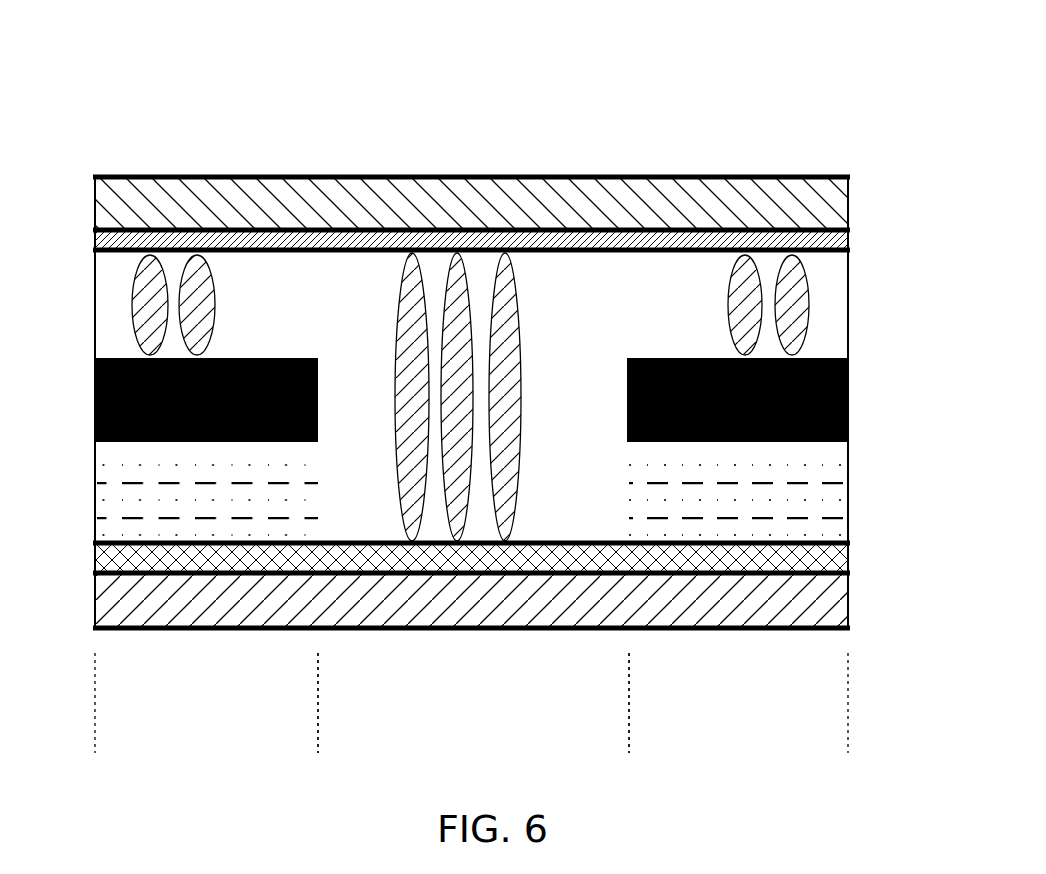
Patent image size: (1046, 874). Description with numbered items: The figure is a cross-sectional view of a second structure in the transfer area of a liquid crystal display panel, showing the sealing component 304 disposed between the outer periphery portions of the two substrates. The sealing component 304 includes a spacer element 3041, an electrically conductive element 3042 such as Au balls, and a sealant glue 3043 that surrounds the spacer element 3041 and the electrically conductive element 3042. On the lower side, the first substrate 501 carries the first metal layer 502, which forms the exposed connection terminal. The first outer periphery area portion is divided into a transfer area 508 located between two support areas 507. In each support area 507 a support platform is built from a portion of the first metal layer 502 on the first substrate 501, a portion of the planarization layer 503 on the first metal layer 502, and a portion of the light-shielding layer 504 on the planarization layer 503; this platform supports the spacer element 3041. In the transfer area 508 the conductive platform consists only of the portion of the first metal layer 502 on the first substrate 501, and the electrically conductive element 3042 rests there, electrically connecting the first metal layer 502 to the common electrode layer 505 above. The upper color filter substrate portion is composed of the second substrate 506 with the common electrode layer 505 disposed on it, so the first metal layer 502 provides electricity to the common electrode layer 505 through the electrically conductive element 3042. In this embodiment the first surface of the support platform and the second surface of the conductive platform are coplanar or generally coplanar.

The sealing component 304 is at (903, 97).
The spacer element 3041 is at (140, 268).
The electrically conductive element 3042 is at (402, 285).
The sealant glue 3043 is at (300, 270).
The first substrate 501 is at (848, 610).
The first metal layer 502 is at (848, 555).
The planarization layer 503 is at (848, 503).
The light-shielding layer 504 is at (848, 400).
The common electrode layer 505 is at (848, 238).
The second substrate 506 is at (848, 203).
The support area 507 is at (97, 697).
The transfer area 508 is at (627, 697).